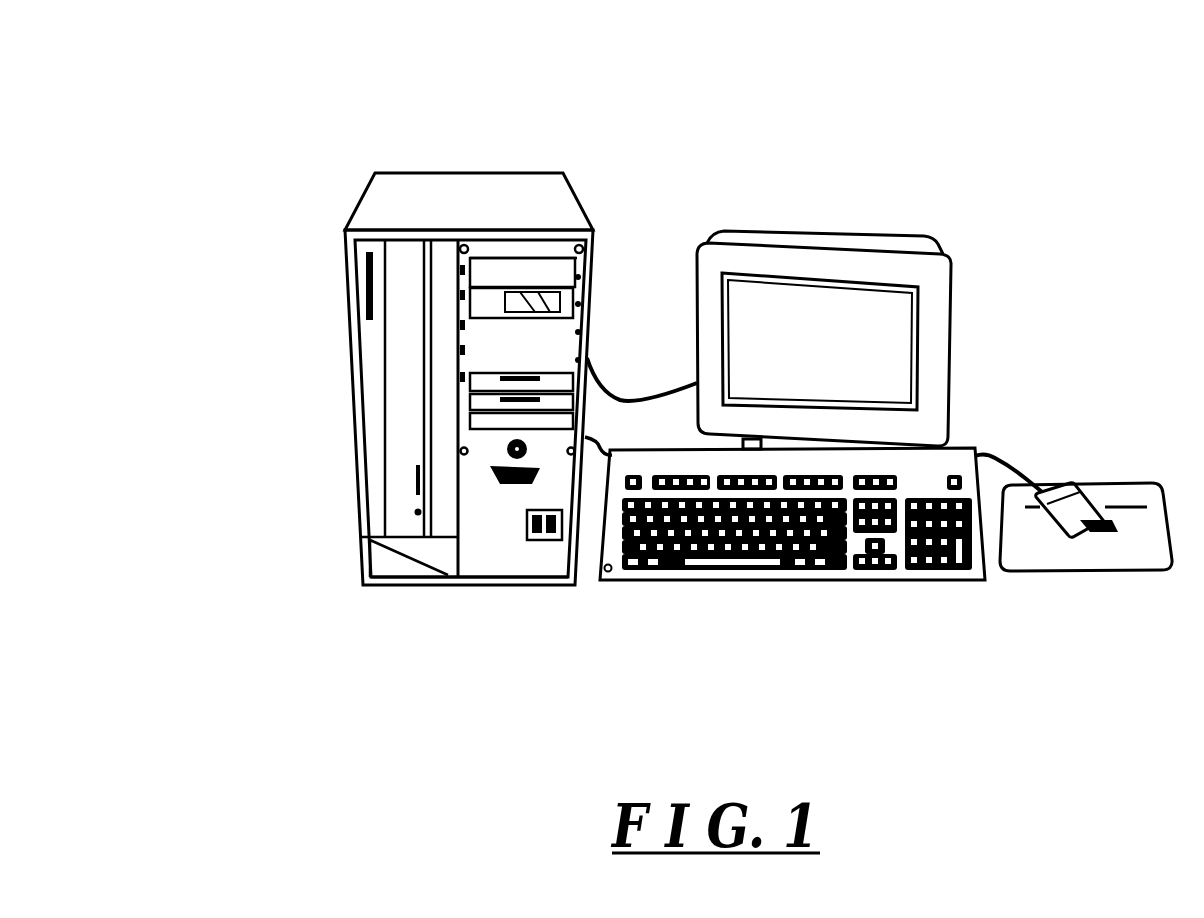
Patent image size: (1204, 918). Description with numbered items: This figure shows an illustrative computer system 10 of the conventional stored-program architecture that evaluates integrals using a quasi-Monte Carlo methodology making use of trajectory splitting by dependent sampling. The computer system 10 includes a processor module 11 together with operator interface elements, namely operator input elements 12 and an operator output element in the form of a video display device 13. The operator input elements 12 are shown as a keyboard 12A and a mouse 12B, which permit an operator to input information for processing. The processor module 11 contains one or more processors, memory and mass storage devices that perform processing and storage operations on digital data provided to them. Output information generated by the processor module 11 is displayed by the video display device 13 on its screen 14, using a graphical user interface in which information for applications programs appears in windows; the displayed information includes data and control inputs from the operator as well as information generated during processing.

The computer system 10 is at (272, 82).
The processor module 11 is at (478, 172).
The operator input element 12 is at (980, 638).
The keyboard 12A is at (838, 590).
The mouse 12B is at (1152, 578).
The video display device 13 is at (957, 349).
The screen 14 is at (354, 402).